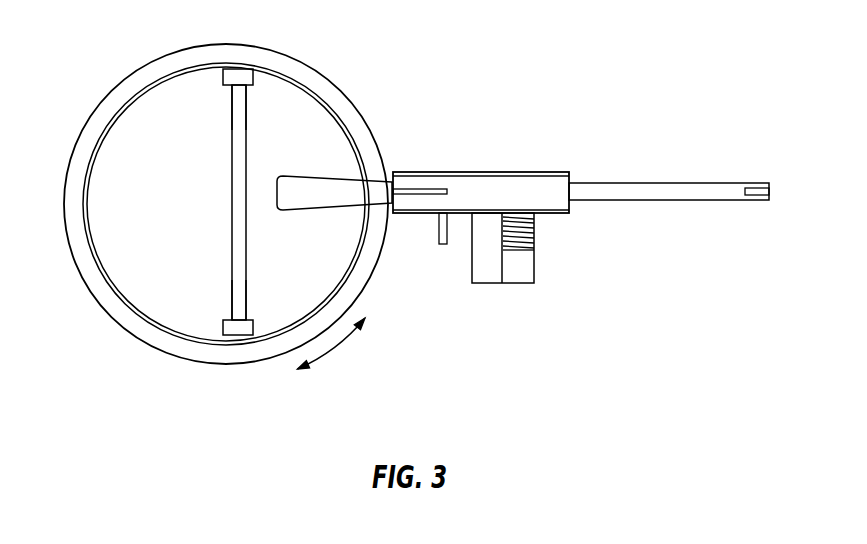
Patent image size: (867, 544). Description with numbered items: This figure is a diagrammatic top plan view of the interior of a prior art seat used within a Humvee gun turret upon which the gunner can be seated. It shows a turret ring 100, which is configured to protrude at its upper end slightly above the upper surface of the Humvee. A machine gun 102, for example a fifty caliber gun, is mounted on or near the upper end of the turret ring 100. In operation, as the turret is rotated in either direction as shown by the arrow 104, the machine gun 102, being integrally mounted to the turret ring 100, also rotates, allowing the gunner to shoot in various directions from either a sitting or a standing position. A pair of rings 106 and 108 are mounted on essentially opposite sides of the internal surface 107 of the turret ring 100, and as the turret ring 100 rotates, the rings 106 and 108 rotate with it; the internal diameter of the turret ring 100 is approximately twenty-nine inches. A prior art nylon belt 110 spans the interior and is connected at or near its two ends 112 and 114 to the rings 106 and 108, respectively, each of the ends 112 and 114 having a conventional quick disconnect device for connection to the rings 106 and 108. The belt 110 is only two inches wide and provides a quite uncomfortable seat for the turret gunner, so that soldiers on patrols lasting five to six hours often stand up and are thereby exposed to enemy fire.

The turret ring 100 is at (370, 134).
The machine gun 102 is at (494, 172).
The arrow 104 is at (336, 345).
The ring 106 is at (237, 73).
The internal surface 107 is at (134, 100).
The ring 108 is at (243, 332).
The nylon belt 110 is at (243, 123).
The end of belt 112 is at (238, 100).
The end of belt 114 is at (232, 313).